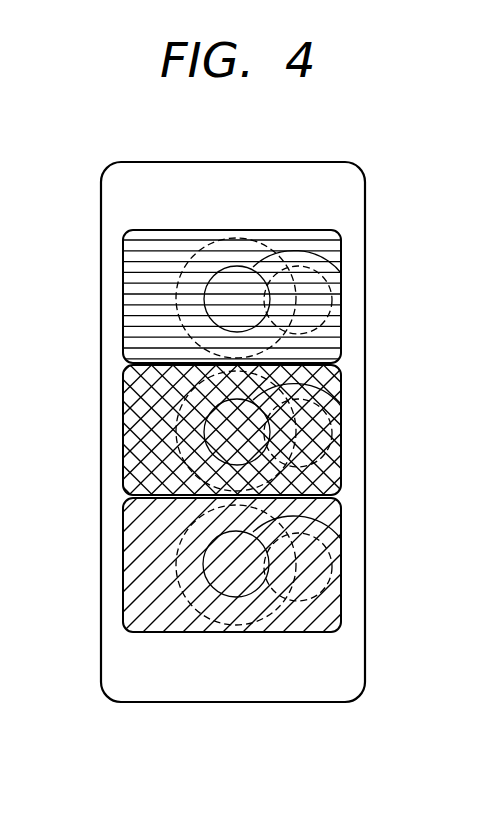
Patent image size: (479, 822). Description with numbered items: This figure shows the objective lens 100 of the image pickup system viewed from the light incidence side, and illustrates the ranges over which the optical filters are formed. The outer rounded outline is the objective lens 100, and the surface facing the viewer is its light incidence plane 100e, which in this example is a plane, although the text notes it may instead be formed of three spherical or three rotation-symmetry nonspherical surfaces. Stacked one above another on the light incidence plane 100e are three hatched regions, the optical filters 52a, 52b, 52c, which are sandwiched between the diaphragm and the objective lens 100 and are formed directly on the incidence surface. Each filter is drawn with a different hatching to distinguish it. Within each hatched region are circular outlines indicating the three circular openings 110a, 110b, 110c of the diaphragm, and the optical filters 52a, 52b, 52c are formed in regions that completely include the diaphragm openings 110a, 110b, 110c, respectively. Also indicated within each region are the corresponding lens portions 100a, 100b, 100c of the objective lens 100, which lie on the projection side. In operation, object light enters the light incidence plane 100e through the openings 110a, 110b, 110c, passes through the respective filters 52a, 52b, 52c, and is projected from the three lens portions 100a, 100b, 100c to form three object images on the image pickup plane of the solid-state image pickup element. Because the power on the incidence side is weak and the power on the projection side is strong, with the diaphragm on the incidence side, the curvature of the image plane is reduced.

The objective lens 100 is at (303, 703).
The light incidence plane 100e is at (352, 651).
The optical filter 52a is at (124, 268).
The optical filter 52b is at (124, 411).
The optical filter 52c is at (124, 551).
The circular opening 110a is at (341, 272).
The circular opening 110b is at (341, 405).
The circular opening 110c is at (341, 538).
The lens portion 100a is at (341, 306).
The lens portion 100b is at (341, 442).
The lens portion 100c is at (341, 575).